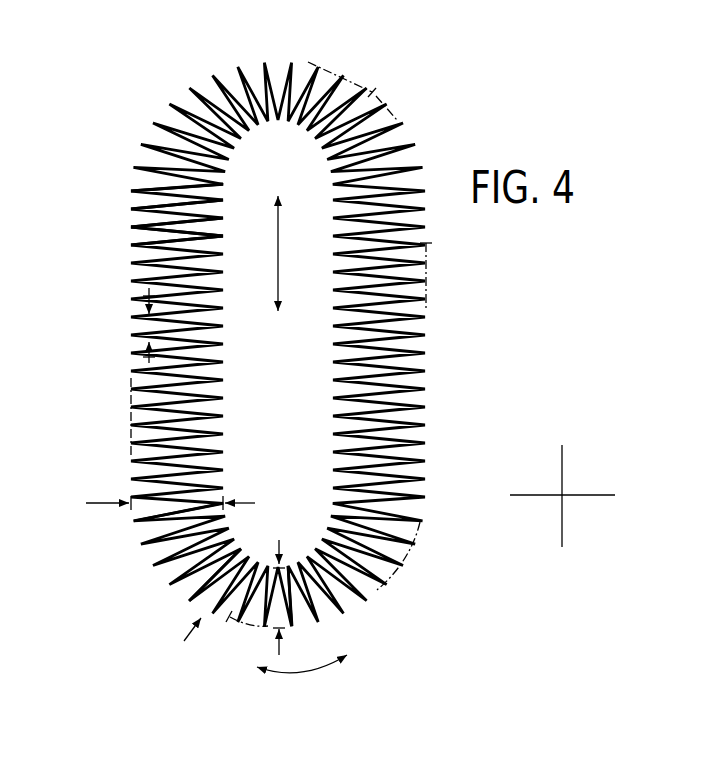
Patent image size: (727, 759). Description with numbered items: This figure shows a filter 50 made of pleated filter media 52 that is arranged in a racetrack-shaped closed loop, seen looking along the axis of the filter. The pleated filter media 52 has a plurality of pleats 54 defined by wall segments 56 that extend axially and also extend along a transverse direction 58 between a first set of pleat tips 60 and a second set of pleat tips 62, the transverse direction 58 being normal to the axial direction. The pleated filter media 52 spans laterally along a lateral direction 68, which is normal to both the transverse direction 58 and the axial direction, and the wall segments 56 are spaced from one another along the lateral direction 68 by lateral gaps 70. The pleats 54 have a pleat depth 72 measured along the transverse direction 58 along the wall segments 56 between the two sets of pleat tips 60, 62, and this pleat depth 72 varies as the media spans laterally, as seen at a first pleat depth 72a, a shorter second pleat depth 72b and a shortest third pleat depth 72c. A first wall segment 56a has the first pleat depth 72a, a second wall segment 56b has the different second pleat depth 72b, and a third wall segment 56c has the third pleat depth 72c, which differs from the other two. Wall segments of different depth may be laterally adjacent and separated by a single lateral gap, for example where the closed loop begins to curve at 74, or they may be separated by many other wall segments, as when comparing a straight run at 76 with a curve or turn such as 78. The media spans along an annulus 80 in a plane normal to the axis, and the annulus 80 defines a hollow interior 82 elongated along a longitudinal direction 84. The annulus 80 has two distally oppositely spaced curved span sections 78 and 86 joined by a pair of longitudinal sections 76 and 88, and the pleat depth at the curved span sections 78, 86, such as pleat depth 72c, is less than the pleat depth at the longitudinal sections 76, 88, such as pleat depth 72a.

The filter 50 is at (128, 76).
The pleated filter media 52 is at (158, 187).
The pleats 54 is at (158, 196).
The wall segments 56 is at (135, 222).
The first set of pleat tips 60 is at (131, 250).
The second set of pleat tips 62 is at (223, 236).
The lateral gaps 70 is at (140, 312).
The longitudinal section 88 is at (128, 393).
The pleat depth 72 is at (108, 503).
The first pleat depth 72a is at (247, 503).
The second pleat depth 72b is at (250, 551).
The third pleat depth 72c is at (280, 547).
The first wall segment 56a is at (172, 510).
The second wall segment 56b is at (205, 604).
The third wall segment 56c is at (295, 610).
The curved span section 86 is at (238, 635).
The lateral direction 68 is at (302, 672).
The transverse direction 58 is at (537, 498).
The curve of closed-loop shape 74 is at (406, 560).
The second span section 76 is at (428, 266).
The first span section 78 is at (368, 86).
The annulus 80 is at (389, 95).
The hollow interior 82 is at (290, 370).
The longitudinal direction 84 is at (298, 253).